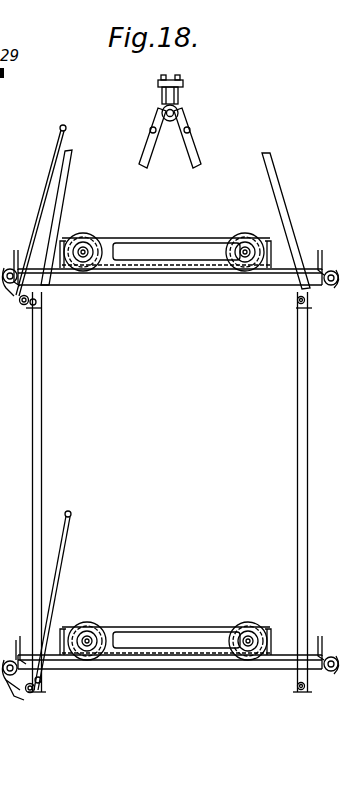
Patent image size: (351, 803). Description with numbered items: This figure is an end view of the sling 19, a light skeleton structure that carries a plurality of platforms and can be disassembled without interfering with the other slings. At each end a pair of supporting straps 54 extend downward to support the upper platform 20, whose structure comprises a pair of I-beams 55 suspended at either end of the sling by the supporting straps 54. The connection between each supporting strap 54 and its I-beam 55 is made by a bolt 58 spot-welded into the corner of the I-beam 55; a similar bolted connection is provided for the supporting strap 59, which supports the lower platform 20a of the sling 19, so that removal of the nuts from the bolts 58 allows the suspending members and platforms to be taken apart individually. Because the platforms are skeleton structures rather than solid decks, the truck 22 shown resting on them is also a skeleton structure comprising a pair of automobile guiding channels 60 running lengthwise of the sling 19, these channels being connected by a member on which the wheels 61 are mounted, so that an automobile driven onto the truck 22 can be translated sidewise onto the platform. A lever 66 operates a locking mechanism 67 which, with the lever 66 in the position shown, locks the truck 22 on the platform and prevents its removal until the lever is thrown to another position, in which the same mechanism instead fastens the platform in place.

The sling 19 is at (262, 136).
The upper platform 20 is at (167, 270).
The lower platform 20a is at (164, 662).
The truck 22 is at (166, 243).
The supporting straps 54 is at (58, 196).
The I-beams 55 is at (24, 305).
The bolt 58 is at (40, 299).
The supporting strap 59 is at (37, 414).
The automobile guiding channels 60 is at (60, 242).
The wheels 61 is at (92, 236).
The lever 66 is at (52, 593).
The locking mechanism 67 is at (12, 694).